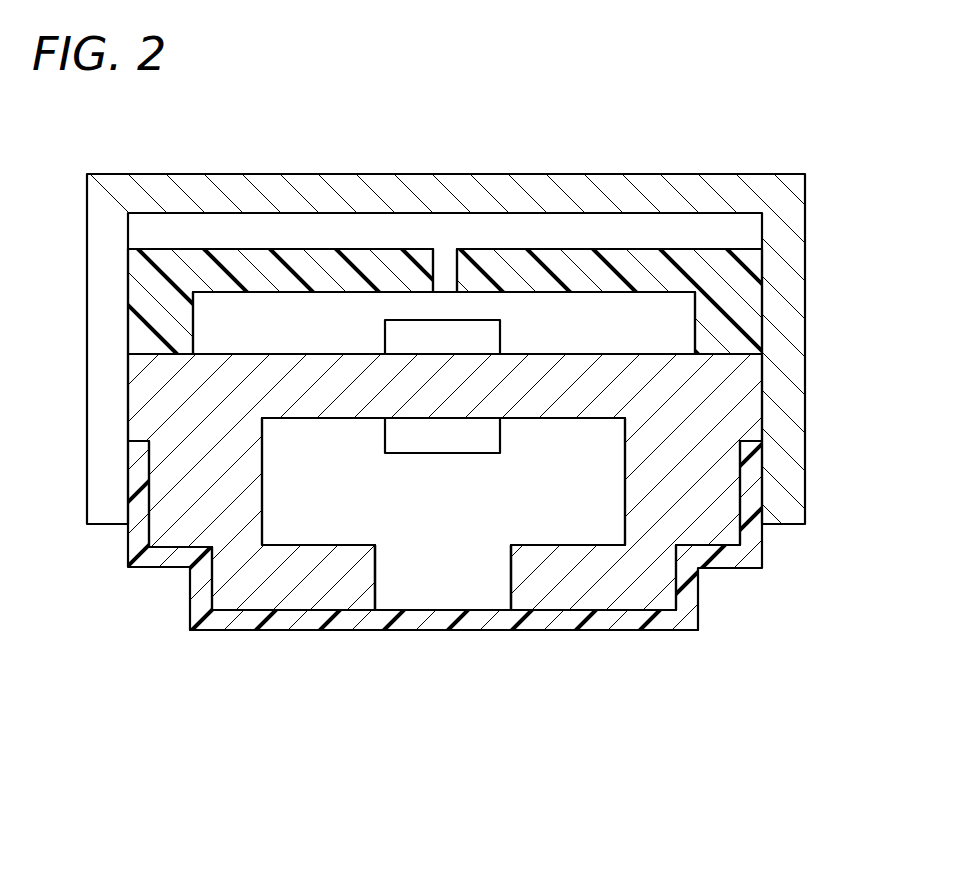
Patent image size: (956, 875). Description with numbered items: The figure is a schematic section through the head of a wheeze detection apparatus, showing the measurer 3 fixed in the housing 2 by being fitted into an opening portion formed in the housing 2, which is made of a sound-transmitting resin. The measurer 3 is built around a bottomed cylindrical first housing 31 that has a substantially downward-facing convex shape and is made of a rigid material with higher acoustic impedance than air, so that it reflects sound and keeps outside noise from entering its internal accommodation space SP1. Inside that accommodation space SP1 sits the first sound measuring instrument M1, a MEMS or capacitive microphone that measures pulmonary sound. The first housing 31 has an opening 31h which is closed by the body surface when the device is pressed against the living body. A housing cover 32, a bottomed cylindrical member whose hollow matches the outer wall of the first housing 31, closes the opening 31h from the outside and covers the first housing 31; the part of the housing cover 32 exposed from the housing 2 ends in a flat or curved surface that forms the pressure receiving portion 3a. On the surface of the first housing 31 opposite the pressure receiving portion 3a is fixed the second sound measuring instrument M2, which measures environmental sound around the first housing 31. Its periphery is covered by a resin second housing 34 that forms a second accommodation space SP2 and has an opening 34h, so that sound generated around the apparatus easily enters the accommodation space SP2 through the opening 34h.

The housing 2 is at (643, 188).
The measurer 3 is at (478, 600).
The pressure receiving portion 3a is at (627, 630).
The first housing 31 is at (305, 598).
The opening 31h is at (376, 588).
The housing cover 32 is at (219, 618).
The second housing 34 is at (247, 257).
The opening 34h is at (433, 262).
The first sound measuring instrument M1 is at (465, 452).
The second sound measuring instrument M2 is at (485, 328).
The accommodation space SP1 is at (540, 523).
The accommodation space SP2 is at (325, 323).